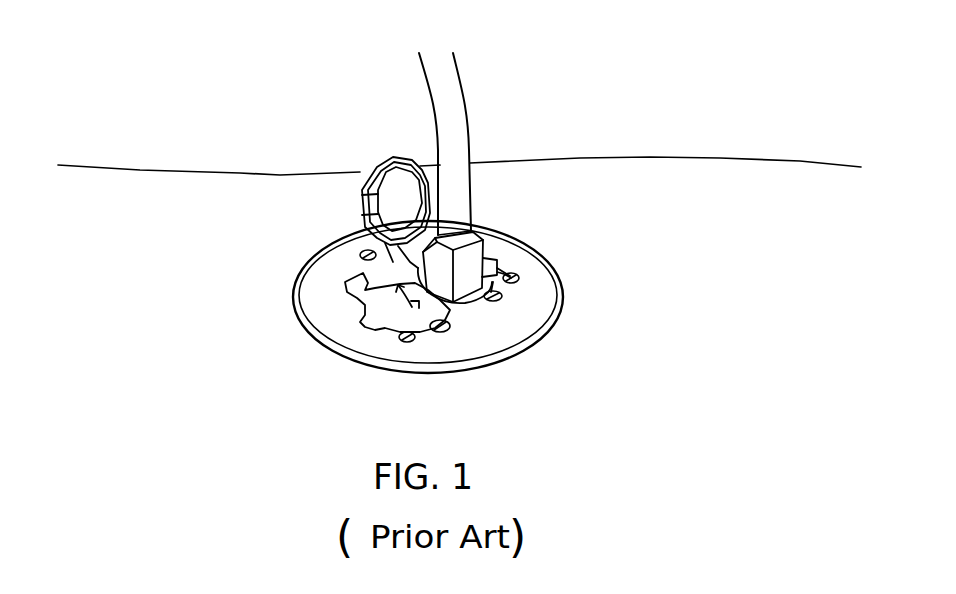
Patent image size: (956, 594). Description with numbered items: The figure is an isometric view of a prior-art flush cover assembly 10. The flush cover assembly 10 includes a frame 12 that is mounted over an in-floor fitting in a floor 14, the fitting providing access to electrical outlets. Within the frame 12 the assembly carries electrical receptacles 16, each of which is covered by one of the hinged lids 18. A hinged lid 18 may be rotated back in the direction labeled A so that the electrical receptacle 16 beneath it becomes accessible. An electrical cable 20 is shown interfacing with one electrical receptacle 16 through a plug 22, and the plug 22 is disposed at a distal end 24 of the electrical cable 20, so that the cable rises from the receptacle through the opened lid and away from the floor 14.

The flush cover assembly 10 is at (515, 270).
The frame 12 is at (541, 295).
The floor 14 is at (685, 198).
The electrical receptacles 16 is at (512, 272).
The hinged lids 18 is at (388, 152).
The electrical cable 20 is at (462, 108).
The plug 22 is at (508, 249).
The distal end 24 is at (461, 224).